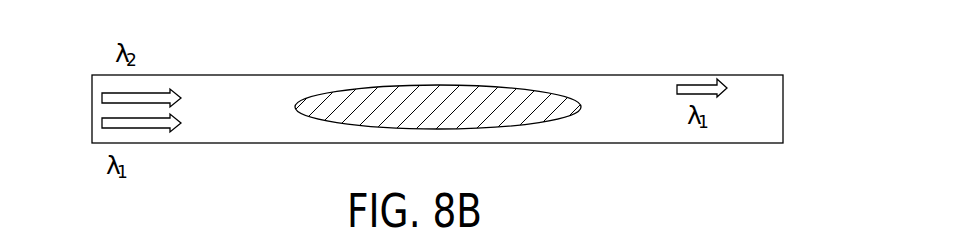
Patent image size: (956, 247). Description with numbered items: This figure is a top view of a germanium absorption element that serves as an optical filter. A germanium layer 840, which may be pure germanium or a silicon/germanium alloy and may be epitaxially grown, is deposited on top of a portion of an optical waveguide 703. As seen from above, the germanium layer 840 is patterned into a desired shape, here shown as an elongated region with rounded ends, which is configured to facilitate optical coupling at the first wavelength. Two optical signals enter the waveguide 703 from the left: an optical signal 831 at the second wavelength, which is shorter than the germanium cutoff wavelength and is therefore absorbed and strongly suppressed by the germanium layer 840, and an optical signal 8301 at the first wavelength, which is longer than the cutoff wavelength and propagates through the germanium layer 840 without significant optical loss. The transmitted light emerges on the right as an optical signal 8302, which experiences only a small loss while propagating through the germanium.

The optical waveguide 703 is at (773, 133).
The germanium layer 840 is at (437, 84).
The optical signal 831 is at (102, 98).
The optical signal 8301 is at (102, 122).
The optical signal 8302 is at (697, 82).